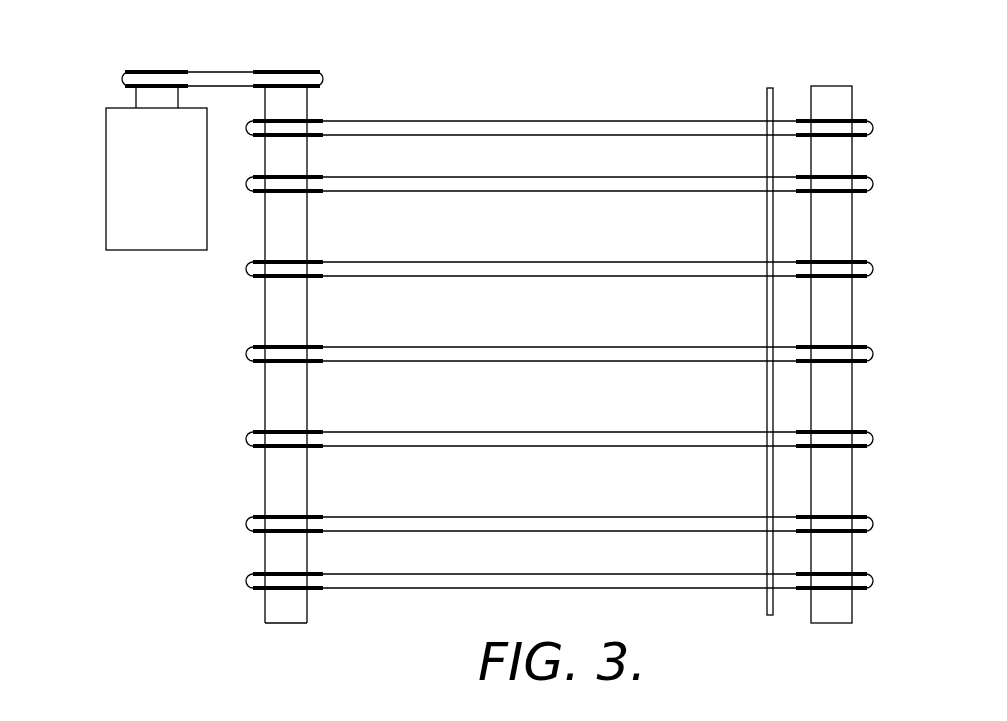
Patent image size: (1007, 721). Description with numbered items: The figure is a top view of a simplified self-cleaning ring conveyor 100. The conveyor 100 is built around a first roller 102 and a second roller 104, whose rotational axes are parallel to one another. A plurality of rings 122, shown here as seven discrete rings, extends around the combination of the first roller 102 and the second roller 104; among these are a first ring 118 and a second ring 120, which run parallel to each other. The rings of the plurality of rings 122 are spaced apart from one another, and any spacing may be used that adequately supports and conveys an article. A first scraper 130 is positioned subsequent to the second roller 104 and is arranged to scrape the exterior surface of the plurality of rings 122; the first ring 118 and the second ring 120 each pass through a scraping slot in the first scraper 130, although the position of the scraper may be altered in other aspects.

The self-cleaning ring conveyor 100 is at (84, 61).
The first roller 102 is at (281, 623).
The second roller 104 is at (832, 624).
The first ring 118 is at (457, 262).
The second ring 120 is at (432, 347).
The plurality of rings 122 is at (607, 357).
The first scraper 130 is at (767, 608).